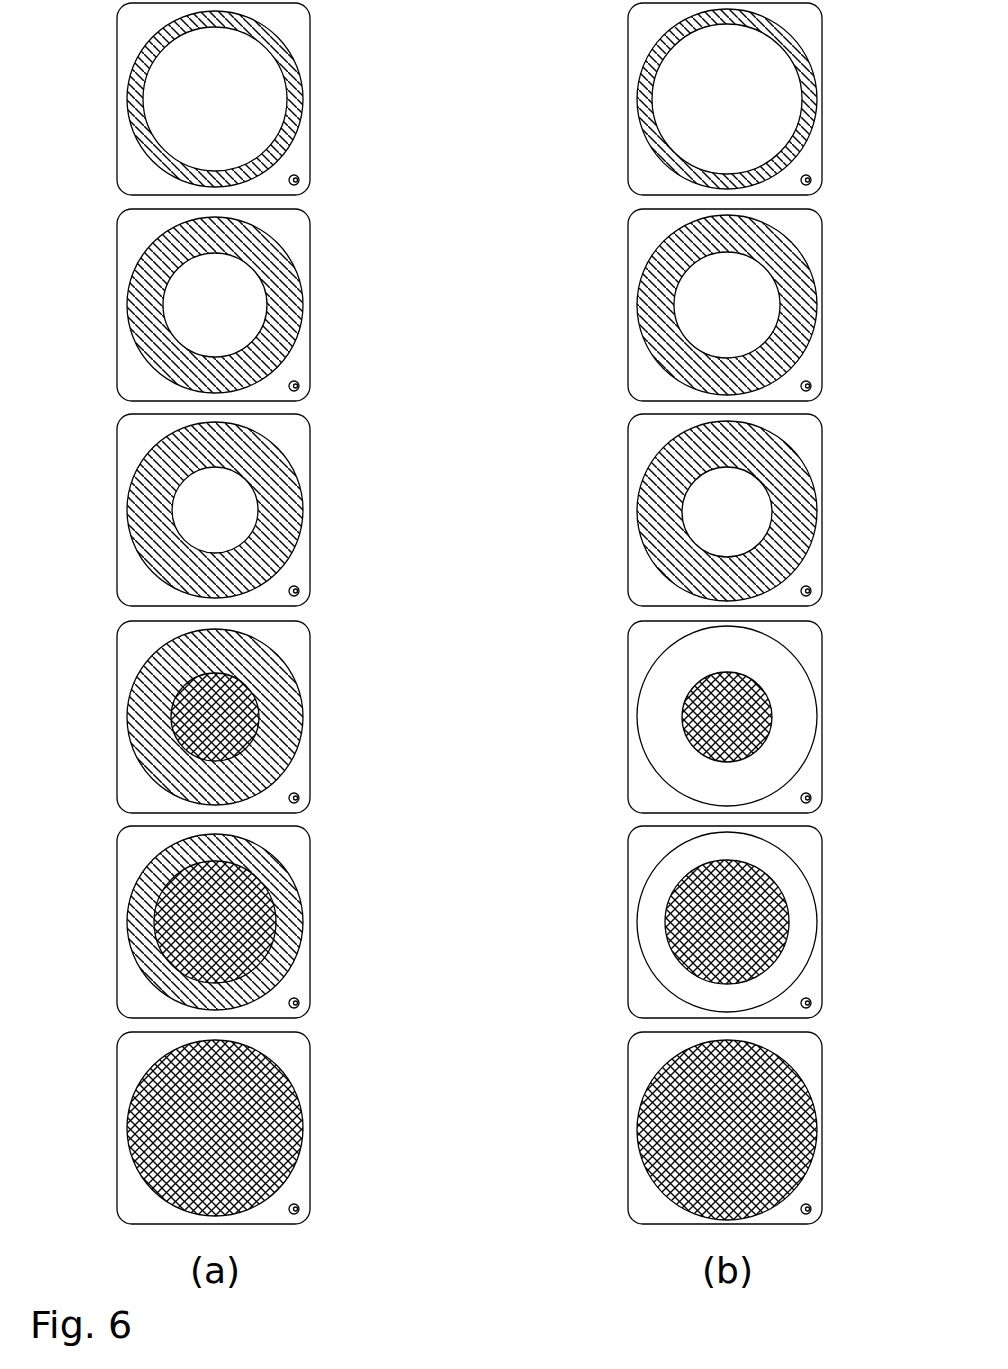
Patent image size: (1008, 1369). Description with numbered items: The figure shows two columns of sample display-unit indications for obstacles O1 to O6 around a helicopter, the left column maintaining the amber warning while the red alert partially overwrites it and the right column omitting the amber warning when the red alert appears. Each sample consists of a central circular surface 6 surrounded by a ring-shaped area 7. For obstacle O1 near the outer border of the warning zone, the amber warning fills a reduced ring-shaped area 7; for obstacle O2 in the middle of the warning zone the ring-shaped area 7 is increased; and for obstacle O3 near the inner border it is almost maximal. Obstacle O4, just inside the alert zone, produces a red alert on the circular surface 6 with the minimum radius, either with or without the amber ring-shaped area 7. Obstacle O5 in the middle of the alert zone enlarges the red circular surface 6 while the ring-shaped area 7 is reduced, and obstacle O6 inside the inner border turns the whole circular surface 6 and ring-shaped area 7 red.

The circular surface 6 is at (418, 946).
The ring-shaped area 7 is at (509, 510).
The obstacle O1 is at (505, 99).
The obstacle O2 is at (505, 305).
The obstacle O3 is at (505, 510).
The obstacle O4 is at (505, 717).
The obstacle O5 is at (505, 922).
The obstacle O6 is at (505, 1128).